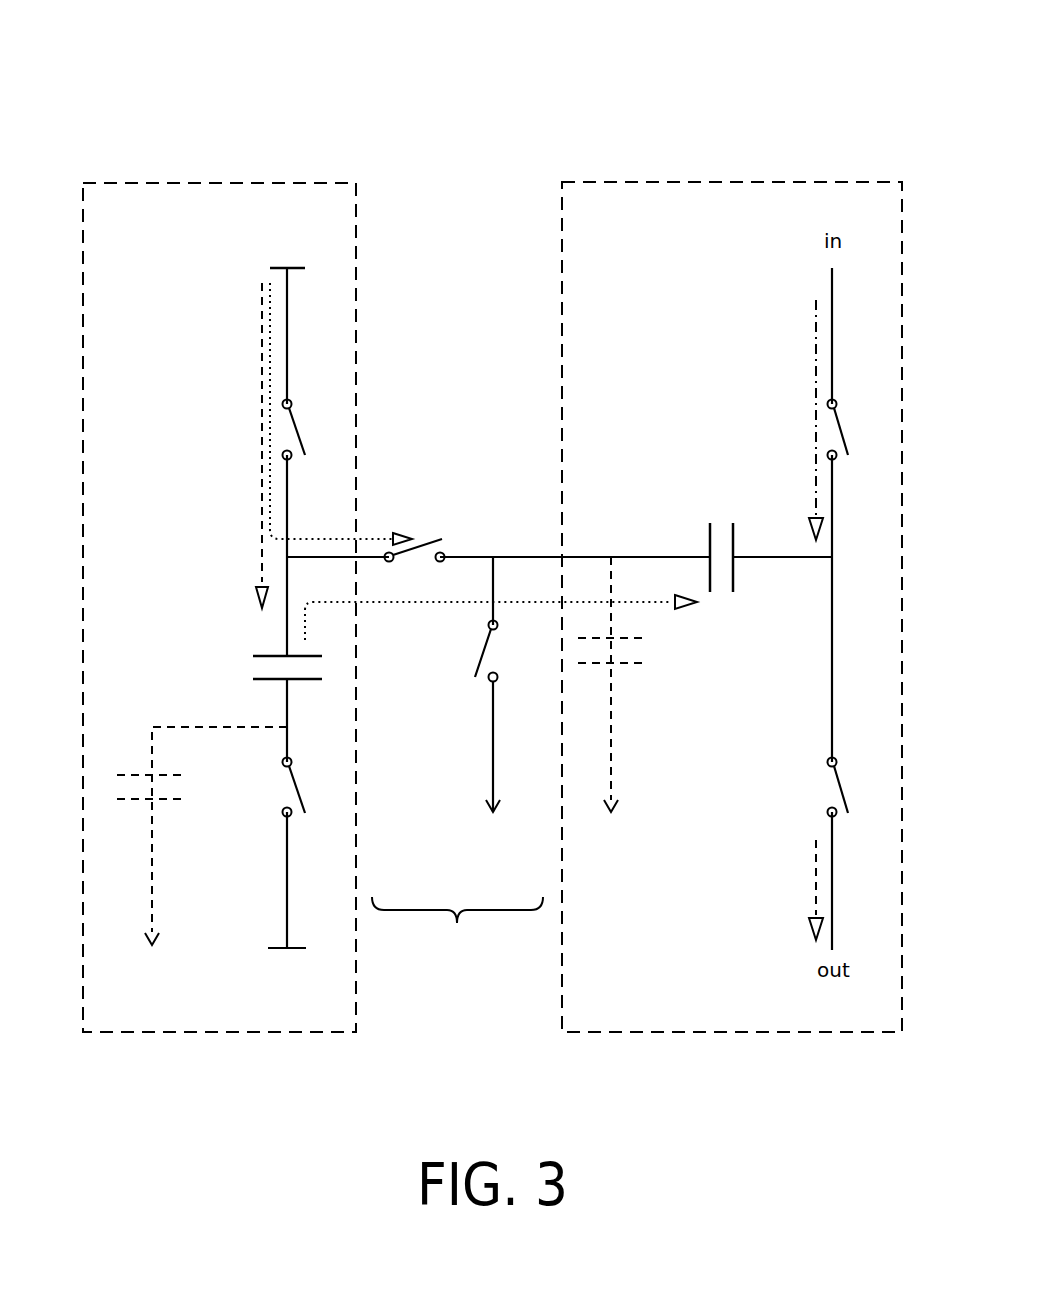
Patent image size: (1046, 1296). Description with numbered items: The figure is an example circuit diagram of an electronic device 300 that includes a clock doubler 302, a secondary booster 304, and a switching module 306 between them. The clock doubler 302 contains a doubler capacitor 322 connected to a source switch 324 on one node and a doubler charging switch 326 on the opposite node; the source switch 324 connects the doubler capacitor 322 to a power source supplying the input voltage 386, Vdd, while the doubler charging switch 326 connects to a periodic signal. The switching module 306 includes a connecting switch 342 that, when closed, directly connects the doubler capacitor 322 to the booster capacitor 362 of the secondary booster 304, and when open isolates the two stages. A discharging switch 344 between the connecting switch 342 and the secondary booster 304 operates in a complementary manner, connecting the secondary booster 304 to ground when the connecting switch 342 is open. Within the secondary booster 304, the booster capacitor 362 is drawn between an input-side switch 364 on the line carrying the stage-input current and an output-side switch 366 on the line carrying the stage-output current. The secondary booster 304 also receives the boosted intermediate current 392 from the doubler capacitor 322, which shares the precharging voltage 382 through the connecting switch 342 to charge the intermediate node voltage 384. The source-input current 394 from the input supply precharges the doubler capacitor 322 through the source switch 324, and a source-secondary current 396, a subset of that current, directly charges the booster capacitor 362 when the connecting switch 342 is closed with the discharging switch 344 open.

The electronic device 300 is at (364, 70).
The clock doubler 302 is at (118, 182).
The secondary booster 304 is at (862, 182).
The switching module 306 is at (457, 927).
The doubler capacitor 322 is at (262, 680).
The source switch 324 is at (300, 430).
The doubler charging switch 326 is at (298, 795).
The connecting switch 342 is at (442, 540).
The discharging switch 344 is at (485, 642).
The booster capacitor 362 is at (708, 540).
The switch 364 is at (842, 436).
The switch 366 is at (840, 785).
The precharging voltage 382 is at (203, 636).
The intermediate node voltage 384 is at (500, 533).
The input voltage 386 is at (275, 235).
The boosted intermediate current 392 is at (655, 600).
The source-input current 394 is at (262, 348).
The source-secondary current 396 is at (318, 540).